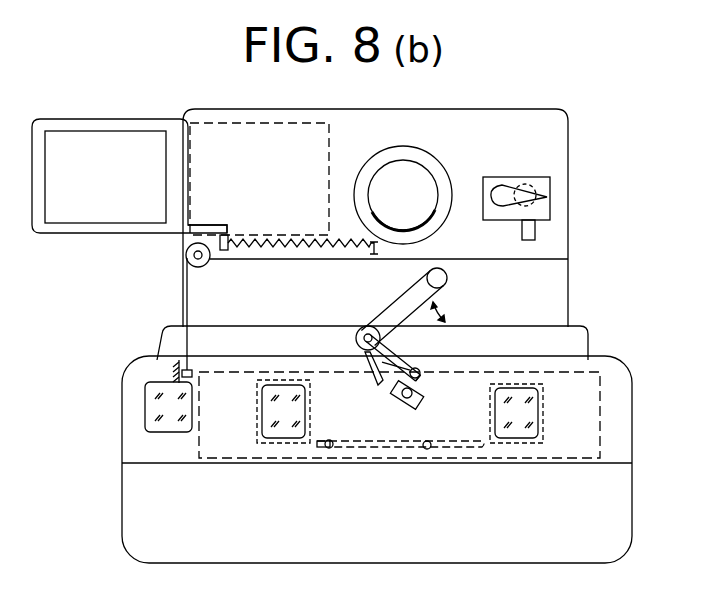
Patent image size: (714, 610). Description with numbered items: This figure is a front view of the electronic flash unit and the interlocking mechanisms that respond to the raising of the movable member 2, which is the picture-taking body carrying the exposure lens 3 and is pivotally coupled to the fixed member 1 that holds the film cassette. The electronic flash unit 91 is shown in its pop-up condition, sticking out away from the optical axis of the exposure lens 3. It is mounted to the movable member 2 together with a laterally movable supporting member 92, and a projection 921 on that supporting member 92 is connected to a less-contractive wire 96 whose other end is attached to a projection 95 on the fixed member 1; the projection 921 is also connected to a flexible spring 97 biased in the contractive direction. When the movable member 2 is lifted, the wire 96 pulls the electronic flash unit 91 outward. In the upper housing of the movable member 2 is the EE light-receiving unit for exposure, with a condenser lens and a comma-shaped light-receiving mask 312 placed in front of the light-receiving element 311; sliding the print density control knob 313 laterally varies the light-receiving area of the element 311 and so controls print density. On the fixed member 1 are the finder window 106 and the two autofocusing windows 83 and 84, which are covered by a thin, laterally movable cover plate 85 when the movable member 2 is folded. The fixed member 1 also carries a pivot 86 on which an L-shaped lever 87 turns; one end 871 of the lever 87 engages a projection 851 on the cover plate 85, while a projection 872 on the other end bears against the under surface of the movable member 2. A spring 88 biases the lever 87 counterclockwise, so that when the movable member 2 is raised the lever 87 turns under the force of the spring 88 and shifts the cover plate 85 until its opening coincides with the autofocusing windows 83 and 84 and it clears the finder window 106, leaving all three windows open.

The fixed member 1 is at (128, 437).
The movable member 2 is at (550, 138).
The exposure lens 3 is at (402, 193).
The electronic flash unit 91 is at (68, 213).
The supporting member 92 is at (205, 228).
The projection 921 is at (227, 243).
The flexible spring 97 is at (290, 243).
The wire 96 is at (187, 285).
The projection 95 is at (177, 372).
The finder window 106 is at (155, 405).
The cover plate 85 is at (595, 413).
The autofocusing window 83 is at (283, 430).
The autofocusing window 84 is at (518, 433).
The pivot 86 is at (380, 360).
The L-shaped lever 87 is at (417, 297).
The end of L-shaped lever 871 is at (400, 387).
The projection 872 is at (447, 277).
The spring 88 is at (377, 370).
The projection 851 is at (405, 395).
The light-receiving element 311 is at (542, 190).
The light-receiving mask 312 is at (542, 208).
The print density control knob 313 is at (533, 230).